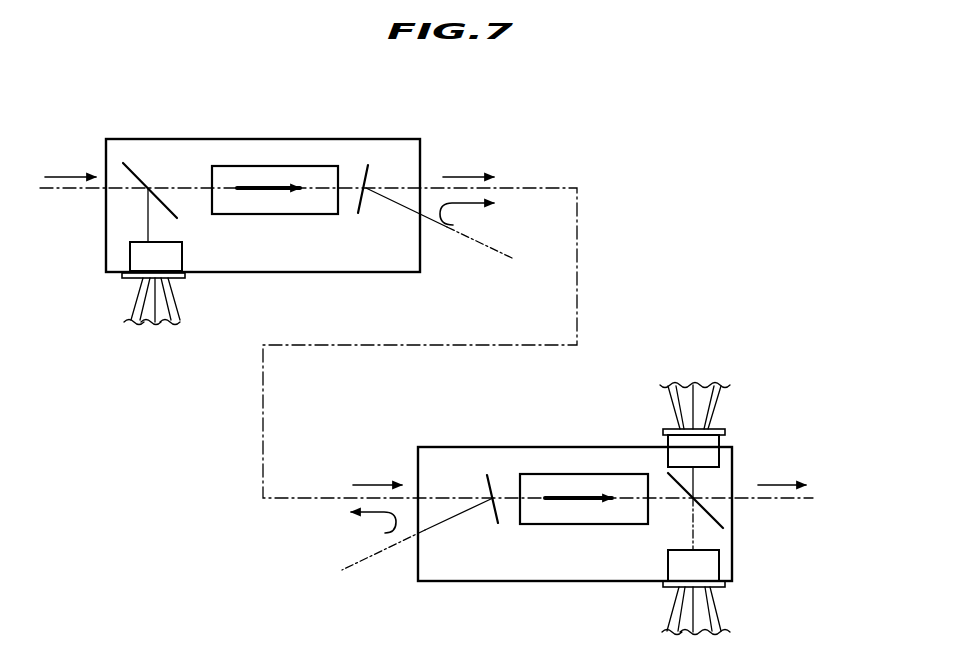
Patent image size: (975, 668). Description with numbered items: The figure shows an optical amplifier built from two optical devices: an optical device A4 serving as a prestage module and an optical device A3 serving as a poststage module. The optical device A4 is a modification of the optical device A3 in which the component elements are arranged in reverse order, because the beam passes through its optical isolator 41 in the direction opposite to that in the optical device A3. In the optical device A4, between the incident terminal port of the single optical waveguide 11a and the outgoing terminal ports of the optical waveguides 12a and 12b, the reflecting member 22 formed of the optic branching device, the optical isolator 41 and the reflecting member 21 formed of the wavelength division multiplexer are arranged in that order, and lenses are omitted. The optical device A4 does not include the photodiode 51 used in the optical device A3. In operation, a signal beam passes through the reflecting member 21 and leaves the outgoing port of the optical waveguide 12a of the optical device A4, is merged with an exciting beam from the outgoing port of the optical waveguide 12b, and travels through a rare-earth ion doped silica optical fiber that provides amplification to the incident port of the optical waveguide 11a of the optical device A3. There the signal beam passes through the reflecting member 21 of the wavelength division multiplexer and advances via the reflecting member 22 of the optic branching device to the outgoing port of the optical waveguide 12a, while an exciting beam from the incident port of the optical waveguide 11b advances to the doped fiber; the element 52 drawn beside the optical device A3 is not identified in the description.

The optical device A4 is at (233, 130).
The optical device A3 is at (600, 432).
The optical waveguide 11a is at (127, 188).
The optical waveguide 11b is at (443, 523).
The optical waveguide 12a is at (410, 187).
The optical waveguide 12b is at (403, 220).
The reflecting member 21 is at (368, 165).
The reflecting member 22 is at (147, 175).
The optical isolator 41 is at (282, 166).
The photodiode 51 is at (668, 430).
The light receiving element 52 is at (182, 255).